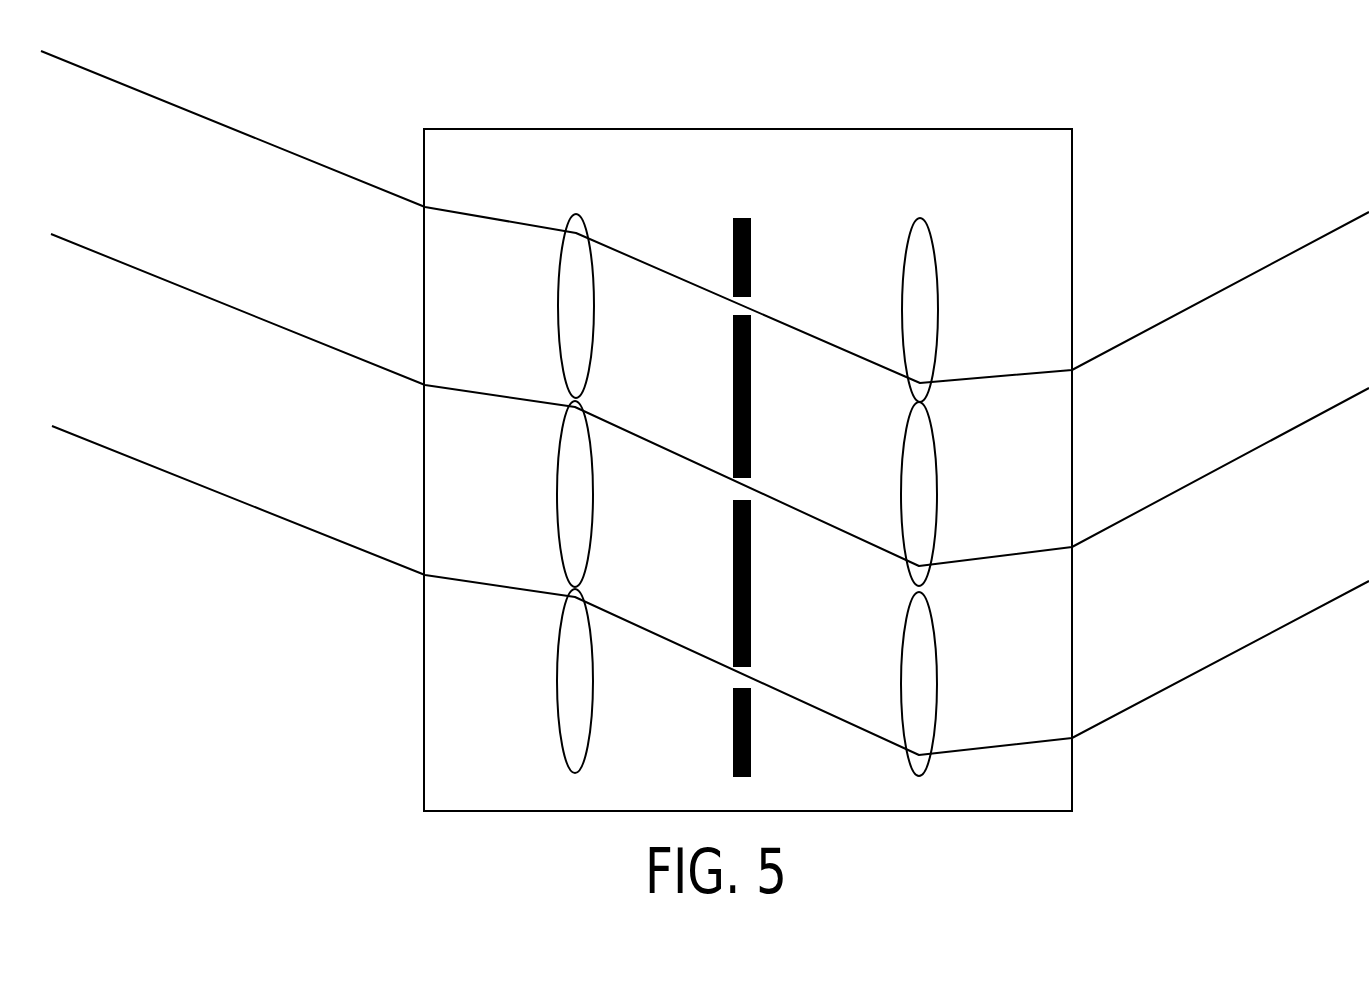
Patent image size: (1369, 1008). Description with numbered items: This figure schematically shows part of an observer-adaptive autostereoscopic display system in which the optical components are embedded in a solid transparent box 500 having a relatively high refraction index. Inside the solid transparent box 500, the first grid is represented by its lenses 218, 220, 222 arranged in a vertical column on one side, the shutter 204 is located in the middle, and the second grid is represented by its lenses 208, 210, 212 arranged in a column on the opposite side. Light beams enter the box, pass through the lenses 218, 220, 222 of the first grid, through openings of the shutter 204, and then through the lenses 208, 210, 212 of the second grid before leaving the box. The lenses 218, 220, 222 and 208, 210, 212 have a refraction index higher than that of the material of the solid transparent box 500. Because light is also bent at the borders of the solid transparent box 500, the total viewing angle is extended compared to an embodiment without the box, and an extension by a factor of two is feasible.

The solid transparent box 500 is at (438, 763).
The shutter 204 is at (743, 217).
The lens 218 is at (562, 308).
The lens 220 is at (571, 513).
The lens 222 is at (570, 670).
The lens 208 is at (927, 302).
The lens 210 is at (929, 486).
The lens 212 is at (923, 675).